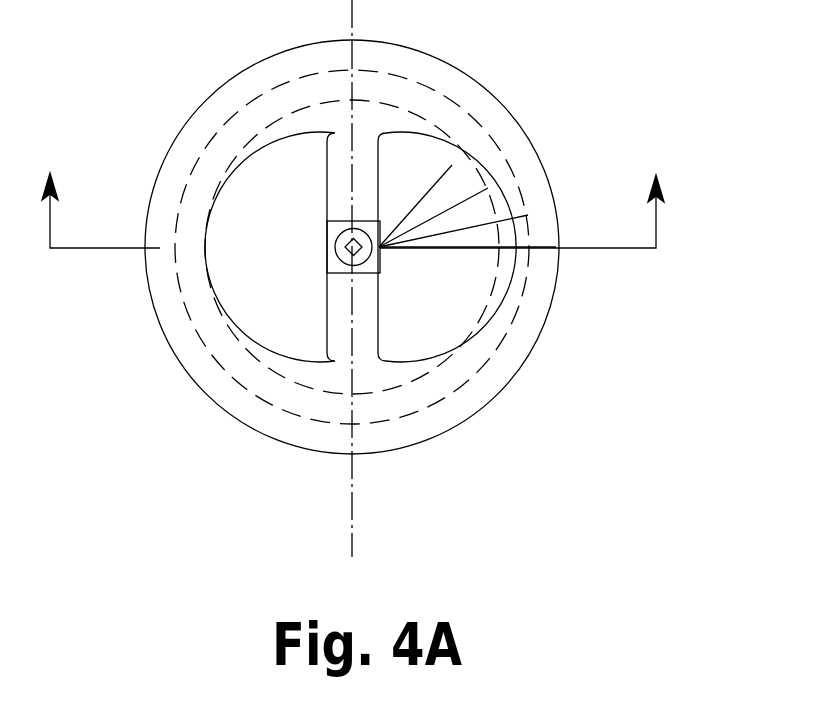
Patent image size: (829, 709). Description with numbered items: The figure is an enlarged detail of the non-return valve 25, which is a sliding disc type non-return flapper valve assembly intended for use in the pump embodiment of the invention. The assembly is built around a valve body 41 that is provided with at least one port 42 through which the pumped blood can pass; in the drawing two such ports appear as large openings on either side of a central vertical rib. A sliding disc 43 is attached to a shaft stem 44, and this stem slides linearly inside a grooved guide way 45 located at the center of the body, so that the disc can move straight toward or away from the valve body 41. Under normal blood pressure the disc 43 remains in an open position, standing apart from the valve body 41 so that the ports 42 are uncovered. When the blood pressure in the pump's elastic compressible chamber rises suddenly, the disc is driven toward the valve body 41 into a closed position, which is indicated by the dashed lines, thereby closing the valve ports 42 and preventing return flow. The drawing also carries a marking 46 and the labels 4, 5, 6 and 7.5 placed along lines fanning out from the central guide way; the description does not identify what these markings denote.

The non-return valve 25 is at (355, 278).
The valve body 41 is at (535, 137).
The port 42 is at (287, 185).
The sliding disc 43 is at (452, 347).
The shaft stem 44 is at (327, 273).
The grooved guide way 45 is at (380, 273).
The outer circular groove 46 is at (403, 413).
The angular reference line 4 is at (415, 206).
The angular reference line 5 is at (433, 215).
The angular reference line 6 is at (453, 217).
The angular reference line 7.5 is at (480, 229).